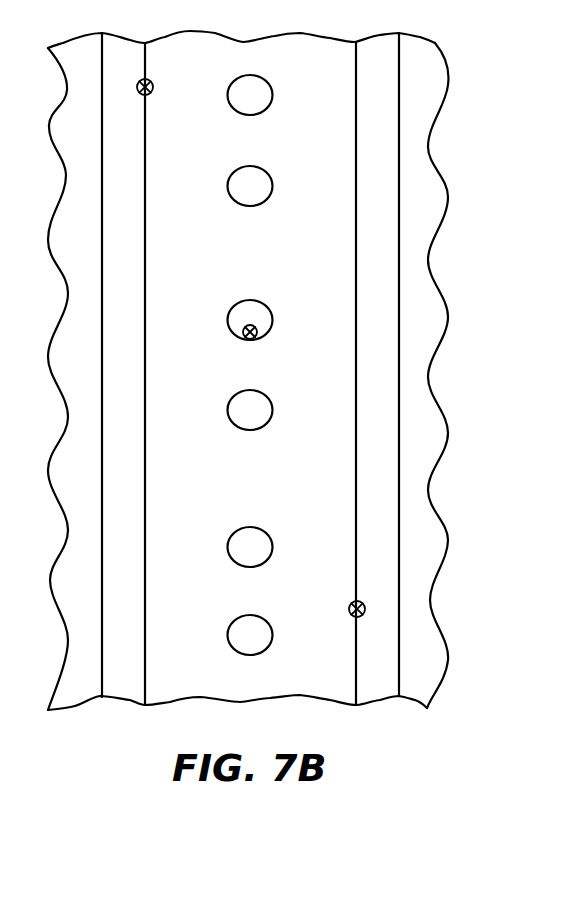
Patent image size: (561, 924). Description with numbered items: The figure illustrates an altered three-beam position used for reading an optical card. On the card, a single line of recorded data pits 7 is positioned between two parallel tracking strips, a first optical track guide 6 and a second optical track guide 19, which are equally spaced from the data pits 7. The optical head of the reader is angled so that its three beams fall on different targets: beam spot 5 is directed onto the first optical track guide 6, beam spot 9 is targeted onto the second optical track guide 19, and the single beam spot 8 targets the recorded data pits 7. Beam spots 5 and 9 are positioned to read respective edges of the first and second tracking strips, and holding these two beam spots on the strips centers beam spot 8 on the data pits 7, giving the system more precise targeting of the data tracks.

The beam spot 5 is at (152, 82).
The optical track guide 6 is at (147, 124).
The recorded data pits 7 is at (250, 76).
The beam spot 8 is at (258, 333).
The beam spot 9 is at (349, 609).
The optical track guide 19 is at (357, 467).